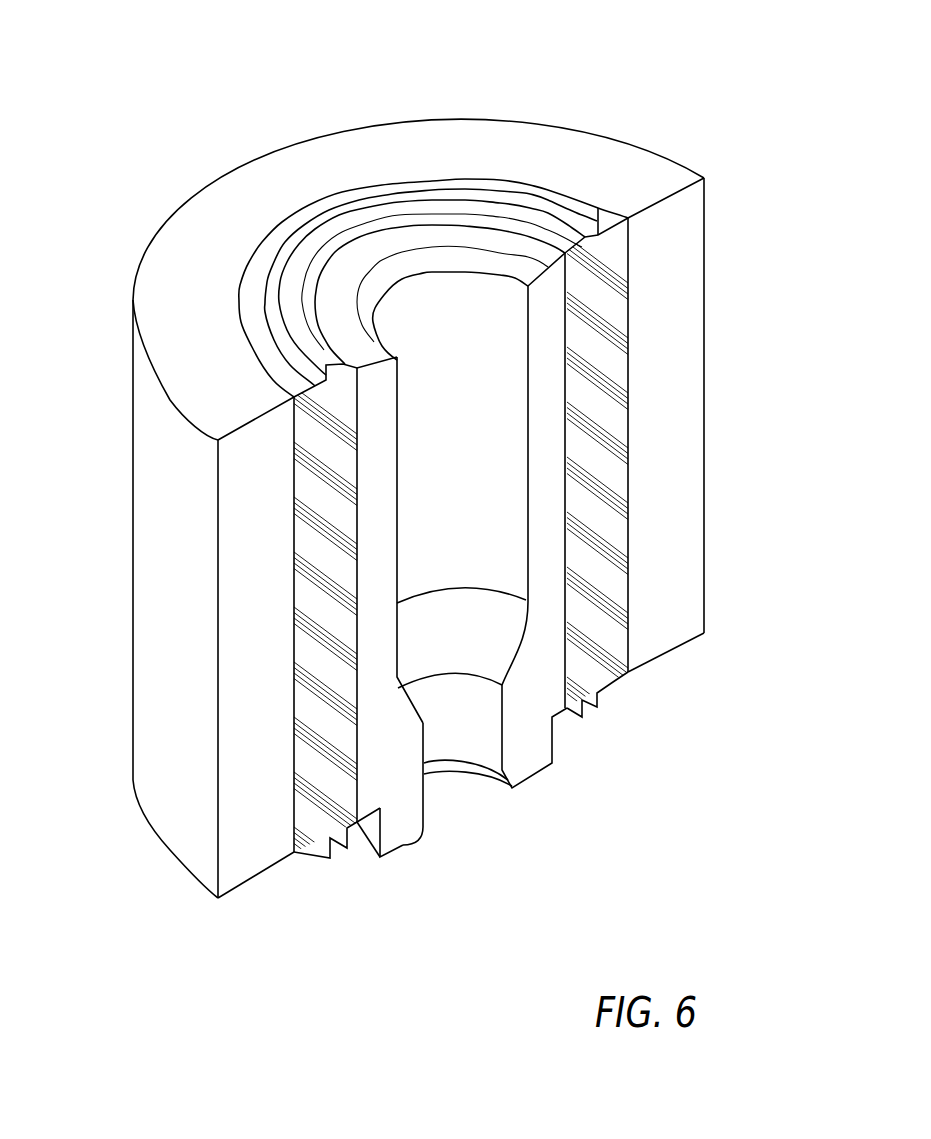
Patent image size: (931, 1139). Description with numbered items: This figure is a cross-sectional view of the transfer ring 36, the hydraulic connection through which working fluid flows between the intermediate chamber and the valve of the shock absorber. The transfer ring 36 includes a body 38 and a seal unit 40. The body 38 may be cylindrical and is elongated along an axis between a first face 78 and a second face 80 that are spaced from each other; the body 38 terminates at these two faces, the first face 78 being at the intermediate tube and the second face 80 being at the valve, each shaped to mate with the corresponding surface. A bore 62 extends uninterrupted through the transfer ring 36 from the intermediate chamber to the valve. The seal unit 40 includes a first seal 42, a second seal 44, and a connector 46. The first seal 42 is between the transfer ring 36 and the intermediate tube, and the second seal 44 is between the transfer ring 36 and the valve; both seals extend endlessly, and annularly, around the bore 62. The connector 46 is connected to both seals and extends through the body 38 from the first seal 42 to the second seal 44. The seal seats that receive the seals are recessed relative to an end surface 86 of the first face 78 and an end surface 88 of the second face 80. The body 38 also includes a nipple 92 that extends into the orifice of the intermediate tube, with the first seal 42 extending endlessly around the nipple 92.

The transfer ring 36 is at (738, 102).
The body 38 is at (138, 379).
The seal unit 40 is at (320, 887).
The first seal 42 is at (618, 688).
The second seal 44 is at (542, 220).
The connector 46 is at (330, 628).
The bore 62 is at (470, 723).
The first face 78 is at (240, 935).
The second face 80 is at (497, 82).
The end surface 86 is at (252, 883).
The end surface 88 is at (210, 218).
The nipple 92 is at (403, 845).